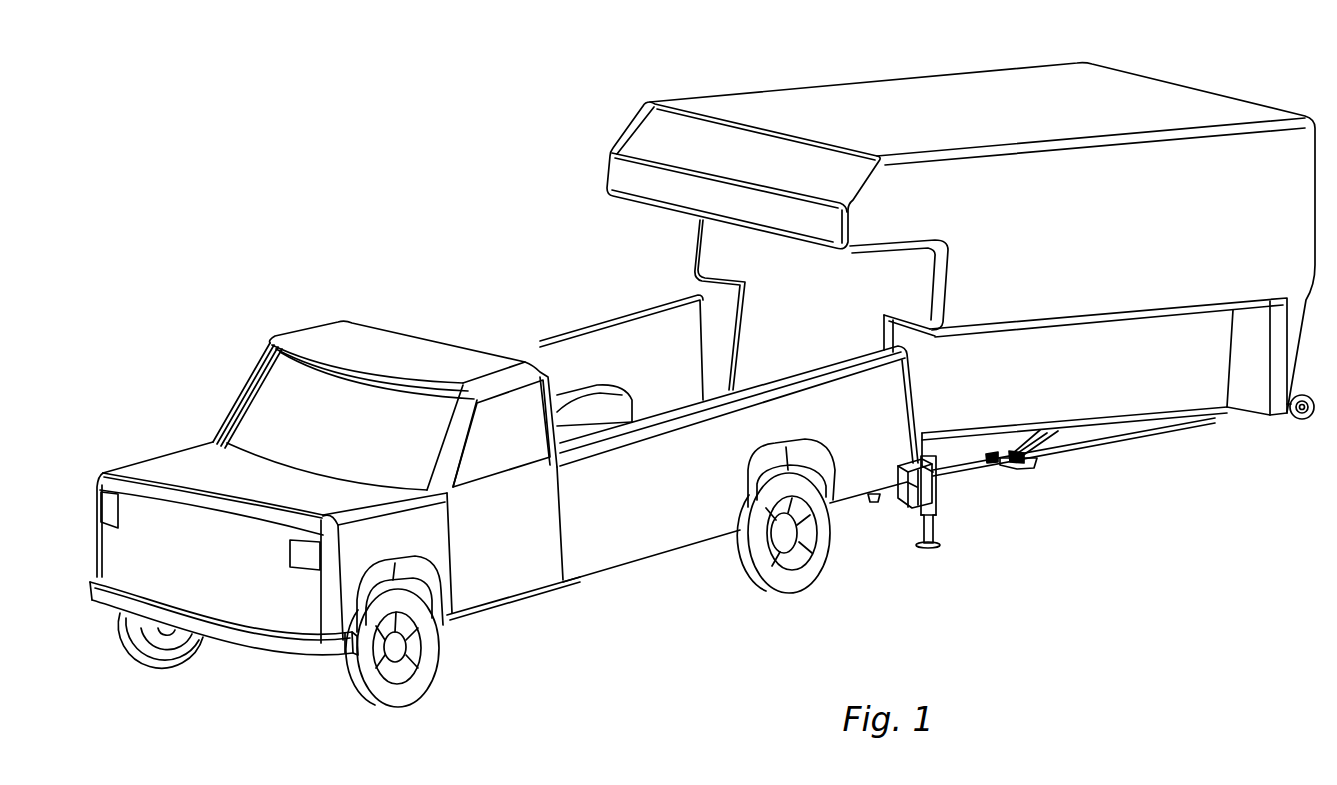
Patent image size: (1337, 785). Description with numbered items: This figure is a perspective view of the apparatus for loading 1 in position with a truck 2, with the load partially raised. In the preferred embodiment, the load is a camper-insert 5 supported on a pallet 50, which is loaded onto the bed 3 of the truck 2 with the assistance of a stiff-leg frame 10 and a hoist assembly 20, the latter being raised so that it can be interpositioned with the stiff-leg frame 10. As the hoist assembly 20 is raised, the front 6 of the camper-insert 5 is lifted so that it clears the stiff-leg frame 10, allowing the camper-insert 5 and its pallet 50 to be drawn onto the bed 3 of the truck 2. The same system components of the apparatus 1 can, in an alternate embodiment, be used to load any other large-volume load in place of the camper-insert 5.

The apparatus for loading 1 is at (1098, 476).
The truck 2 is at (213, 387).
The bed 3 is at (610, 368).
The camper-insert 5 is at (829, 86).
The front 6 is at (757, 296).
The stiff-leg frame 10 is at (917, 512).
The hoist assembly 20 is at (968, 476).
The pallet 50 is at (1208, 422).